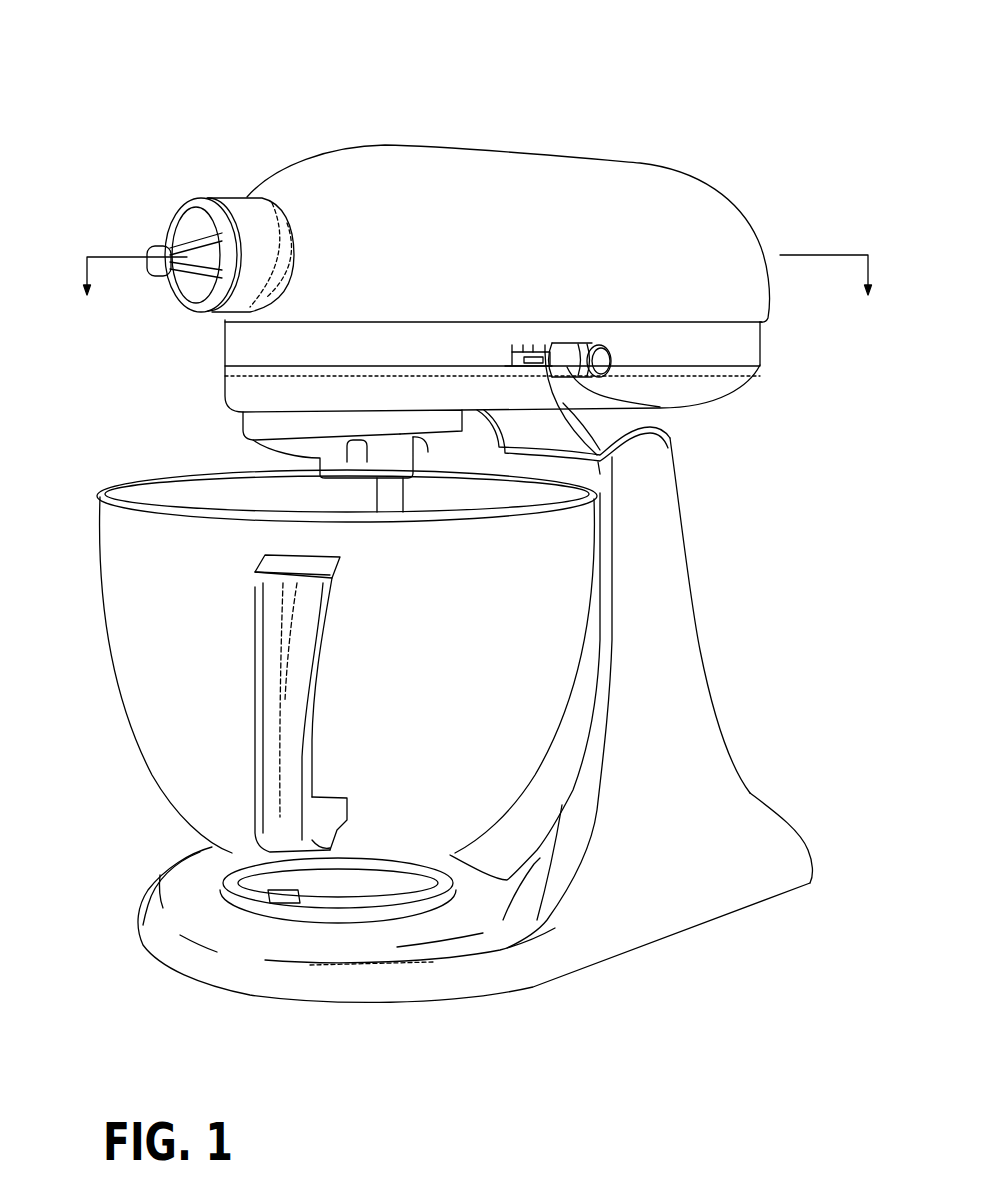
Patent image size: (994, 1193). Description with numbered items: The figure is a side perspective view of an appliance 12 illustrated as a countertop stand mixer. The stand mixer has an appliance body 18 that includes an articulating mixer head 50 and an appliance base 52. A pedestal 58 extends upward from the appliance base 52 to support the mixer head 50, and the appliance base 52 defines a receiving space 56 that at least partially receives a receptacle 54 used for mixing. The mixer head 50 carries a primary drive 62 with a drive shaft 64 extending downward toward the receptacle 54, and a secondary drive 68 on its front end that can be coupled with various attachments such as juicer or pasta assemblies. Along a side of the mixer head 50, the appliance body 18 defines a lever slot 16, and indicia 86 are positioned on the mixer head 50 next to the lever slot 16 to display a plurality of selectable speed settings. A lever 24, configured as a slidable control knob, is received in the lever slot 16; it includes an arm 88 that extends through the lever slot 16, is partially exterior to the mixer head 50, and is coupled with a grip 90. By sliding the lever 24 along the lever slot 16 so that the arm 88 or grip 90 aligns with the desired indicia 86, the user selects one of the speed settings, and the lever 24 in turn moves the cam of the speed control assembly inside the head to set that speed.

The appliance 12 is at (610, 115).
The lever slot 16 is at (545, 345).
The appliance body 18 is at (680, 757).
The lever 24 is at (615, 354).
The mixer head 50 is at (530, 210).
The appliance base 52 is at (472, 975).
The receptacle 54 is at (143, 640).
The receiving space 56 is at (229, 896).
The pedestal 58 is at (657, 597).
The primary drive 62 is at (265, 454).
The drive shaft 64 is at (387, 500).
The secondary drive 68 is at (240, 208).
The indicia 86 is at (508, 344).
The arm 88 is at (597, 456).
The grip 90 is at (700, 405).